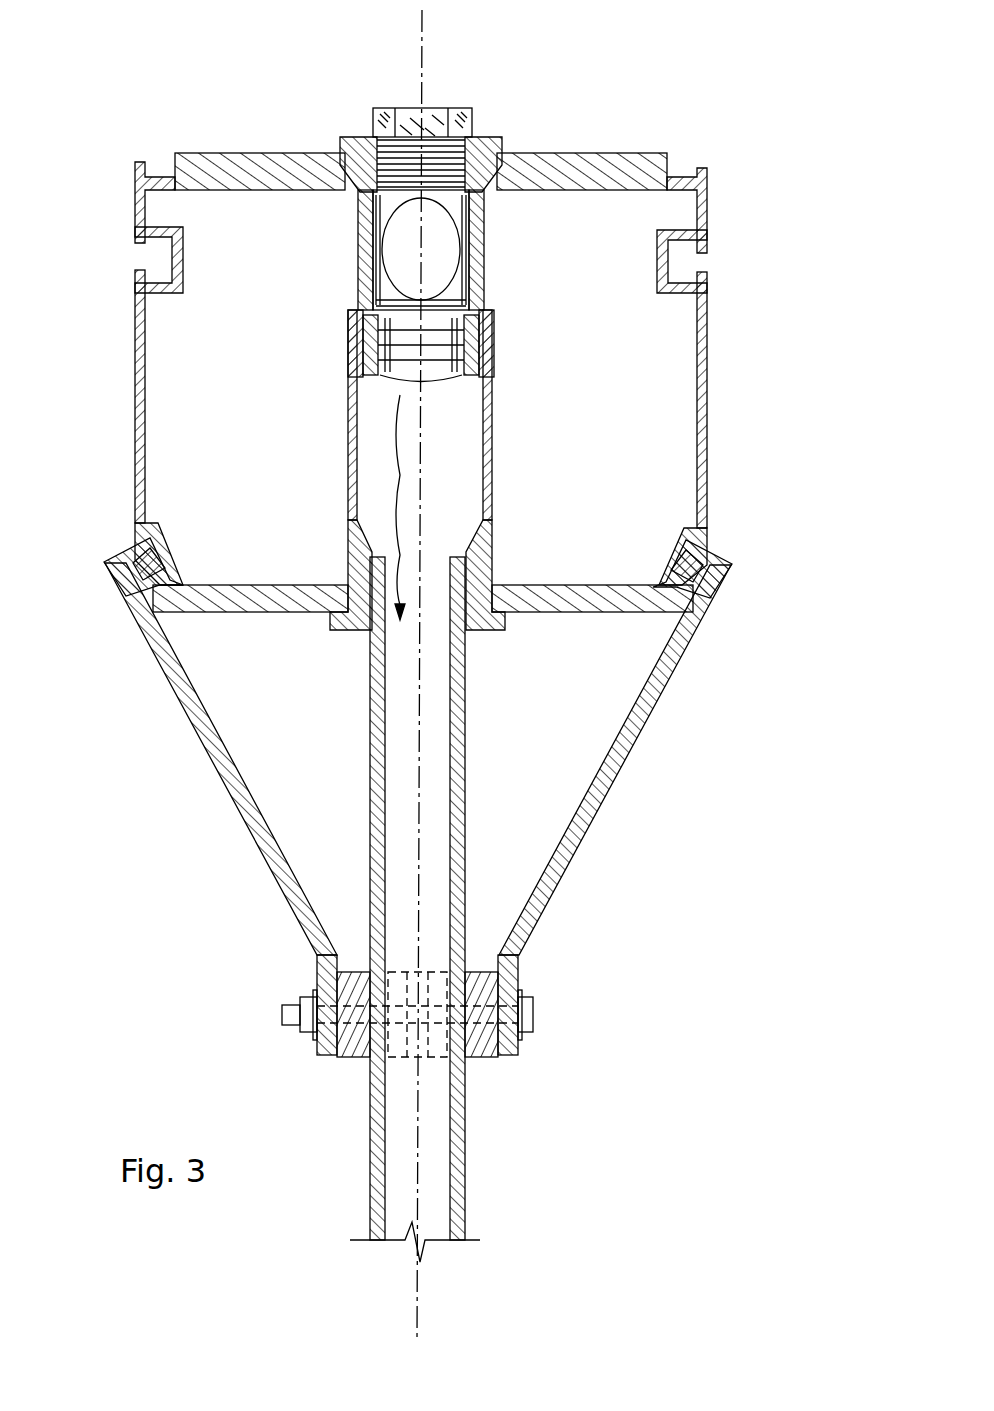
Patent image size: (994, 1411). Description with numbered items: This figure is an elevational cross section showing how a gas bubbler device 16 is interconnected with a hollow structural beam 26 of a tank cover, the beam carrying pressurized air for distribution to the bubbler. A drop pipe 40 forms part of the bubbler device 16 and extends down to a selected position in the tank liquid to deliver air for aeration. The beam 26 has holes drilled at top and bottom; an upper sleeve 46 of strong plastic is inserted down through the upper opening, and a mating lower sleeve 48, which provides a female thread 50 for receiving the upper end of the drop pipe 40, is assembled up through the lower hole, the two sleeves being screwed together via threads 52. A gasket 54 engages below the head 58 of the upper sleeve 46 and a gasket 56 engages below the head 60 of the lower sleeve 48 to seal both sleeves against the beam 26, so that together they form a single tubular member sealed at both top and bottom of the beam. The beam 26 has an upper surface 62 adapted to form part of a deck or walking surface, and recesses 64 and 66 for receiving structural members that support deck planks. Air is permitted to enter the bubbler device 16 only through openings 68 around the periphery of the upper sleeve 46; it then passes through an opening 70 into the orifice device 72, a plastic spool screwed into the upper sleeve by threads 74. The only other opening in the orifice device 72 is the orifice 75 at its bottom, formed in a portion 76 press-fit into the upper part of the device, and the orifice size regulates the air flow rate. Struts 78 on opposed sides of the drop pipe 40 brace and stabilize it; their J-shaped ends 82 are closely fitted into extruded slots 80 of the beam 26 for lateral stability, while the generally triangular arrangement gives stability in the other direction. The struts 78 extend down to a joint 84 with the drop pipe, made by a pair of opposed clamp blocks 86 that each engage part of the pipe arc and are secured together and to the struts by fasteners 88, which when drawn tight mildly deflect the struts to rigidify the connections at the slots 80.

The gas bubbler device 16 is at (404, 98).
The hollow structural beam 26 is at (464, 363).
The drop pipe 40 is at (465, 810).
The upper sleeve 46 is at (420, 274).
The lower sleeve 48 is at (376, 505).
The female thread 50 is at (378, 585).
The threads 52 is at (425, 385).
The gasket 54 is at (505, 155).
The gasket 56 is at (505, 612).
The head of upper sleeve 58 is at (340, 150).
The head of lower sleeve 60 is at (340, 630).
The upper surface 62 is at (215, 152).
The recess 64 is at (705, 172).
The recess 66 is at (672, 258).
The openings 68 is at (355, 265).
The opening 70 is at (433, 240).
The orifice device 72 is at (440, 107).
The threads 74 is at (365, 137).
The orifice 75 is at (410, 380).
The portion 76 is at (432, 327).
The struts 78 is at (433, 709).
The extruded slots 80 is at (140, 570).
The J-shaped ends 82 is at (720, 553).
The joint 84 is at (460, 1013).
The clamp blocks 86 is at (345, 1055).
The fasteners 88 is at (535, 1015).